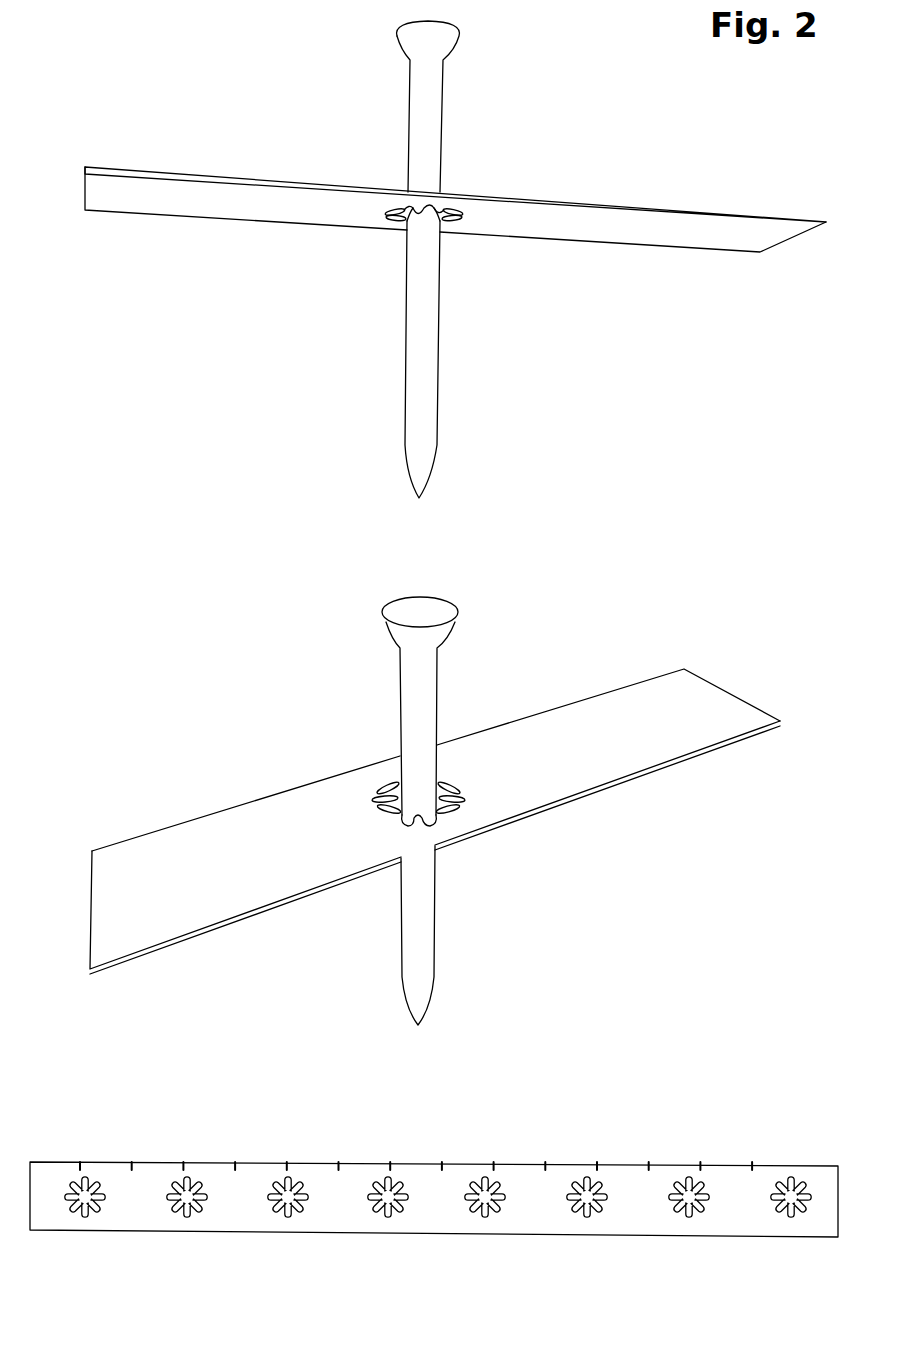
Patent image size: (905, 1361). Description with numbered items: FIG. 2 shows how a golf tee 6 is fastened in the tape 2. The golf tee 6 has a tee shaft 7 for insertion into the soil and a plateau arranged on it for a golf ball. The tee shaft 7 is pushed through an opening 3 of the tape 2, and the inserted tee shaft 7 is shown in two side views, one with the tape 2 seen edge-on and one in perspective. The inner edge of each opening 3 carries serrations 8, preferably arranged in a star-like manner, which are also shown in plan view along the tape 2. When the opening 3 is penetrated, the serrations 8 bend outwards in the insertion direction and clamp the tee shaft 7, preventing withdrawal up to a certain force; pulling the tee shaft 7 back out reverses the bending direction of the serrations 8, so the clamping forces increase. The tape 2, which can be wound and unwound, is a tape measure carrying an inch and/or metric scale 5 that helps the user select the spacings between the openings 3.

The tape 2 is at (641, 233).
The opening 3 is at (387, 1197).
The scale 5 is at (545, 1173).
The golf tee 6 is at (473, 95).
The tee shaft 7 is at (428, 355).
The serrations 8 is at (443, 216).